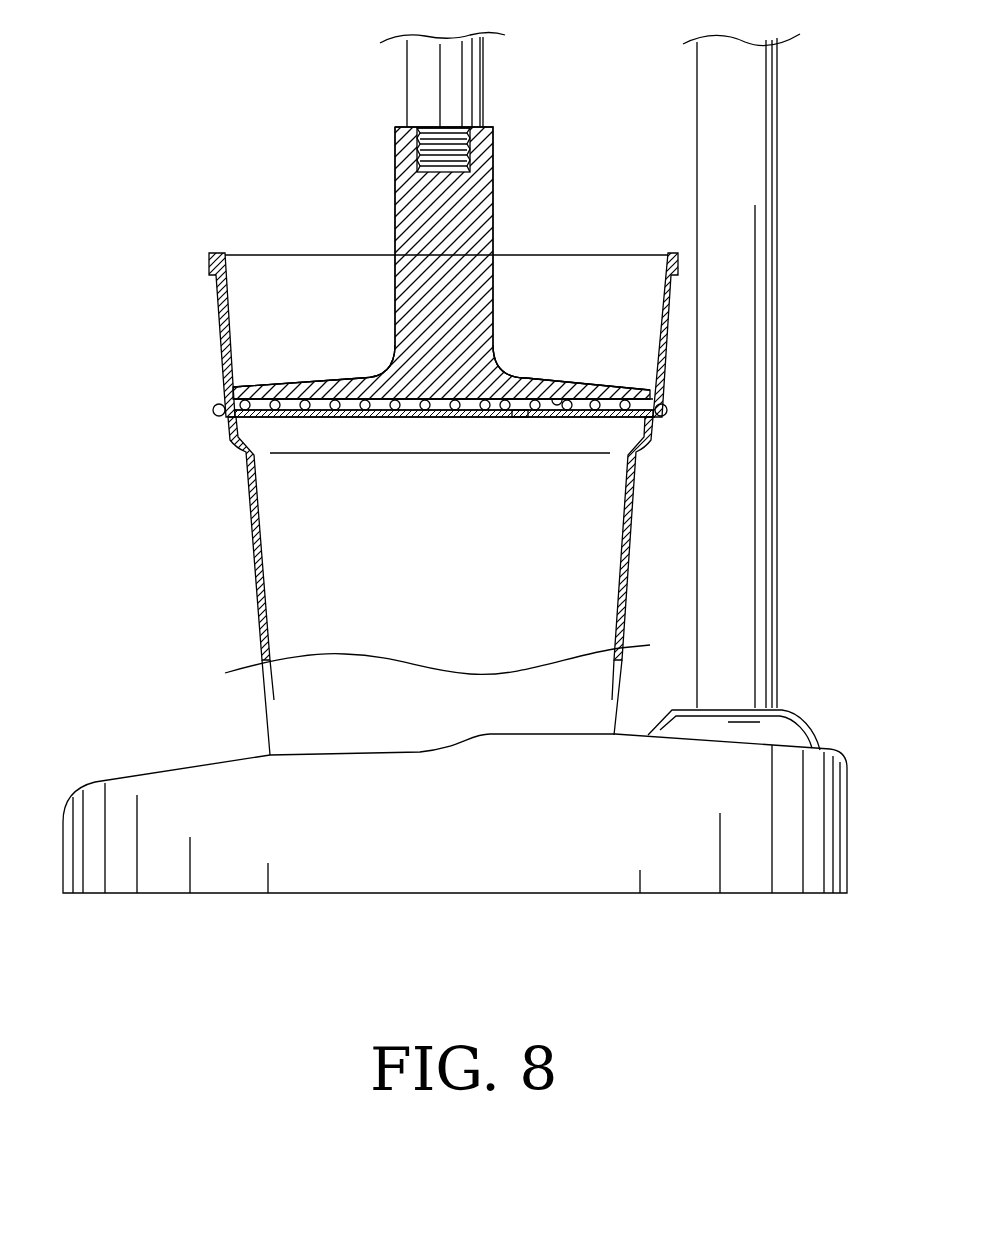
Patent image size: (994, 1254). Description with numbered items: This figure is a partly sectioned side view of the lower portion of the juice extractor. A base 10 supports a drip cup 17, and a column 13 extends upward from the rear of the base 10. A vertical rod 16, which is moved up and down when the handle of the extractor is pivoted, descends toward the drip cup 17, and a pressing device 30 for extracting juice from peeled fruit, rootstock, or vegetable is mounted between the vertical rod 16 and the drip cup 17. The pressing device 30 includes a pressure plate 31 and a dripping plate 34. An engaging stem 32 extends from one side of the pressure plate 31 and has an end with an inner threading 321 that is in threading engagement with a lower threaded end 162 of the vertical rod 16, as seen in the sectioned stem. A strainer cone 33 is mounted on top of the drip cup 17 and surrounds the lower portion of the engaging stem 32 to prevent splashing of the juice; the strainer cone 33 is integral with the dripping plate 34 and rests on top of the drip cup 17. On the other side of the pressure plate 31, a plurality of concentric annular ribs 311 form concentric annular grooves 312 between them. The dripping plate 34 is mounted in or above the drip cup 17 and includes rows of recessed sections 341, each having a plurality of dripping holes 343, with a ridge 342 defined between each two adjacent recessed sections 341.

The base 10 is at (585, 893).
The column 13 is at (770, 364).
The vertical rod 16 is at (468, 75).
The lower threaded end 162 is at (470, 135).
The drip cup 17 is at (248, 535).
The pressing device 30 is at (247, 218).
The pressure plate 31 is at (330, 378).
The concentric annular ribs 311 is at (560, 400).
The concentric annular grooves 312 is at (545, 397).
The engaging stem 32 is at (416, 186).
The inner threading 321 is at (416, 133).
The strainer cone 33 is at (215, 353).
The dripping plate 34 is at (418, 420).
The recessed sections 341 is at (505, 420).
The ridge 342 is at (520, 420).
The dripping holes 343 is at (567, 420).